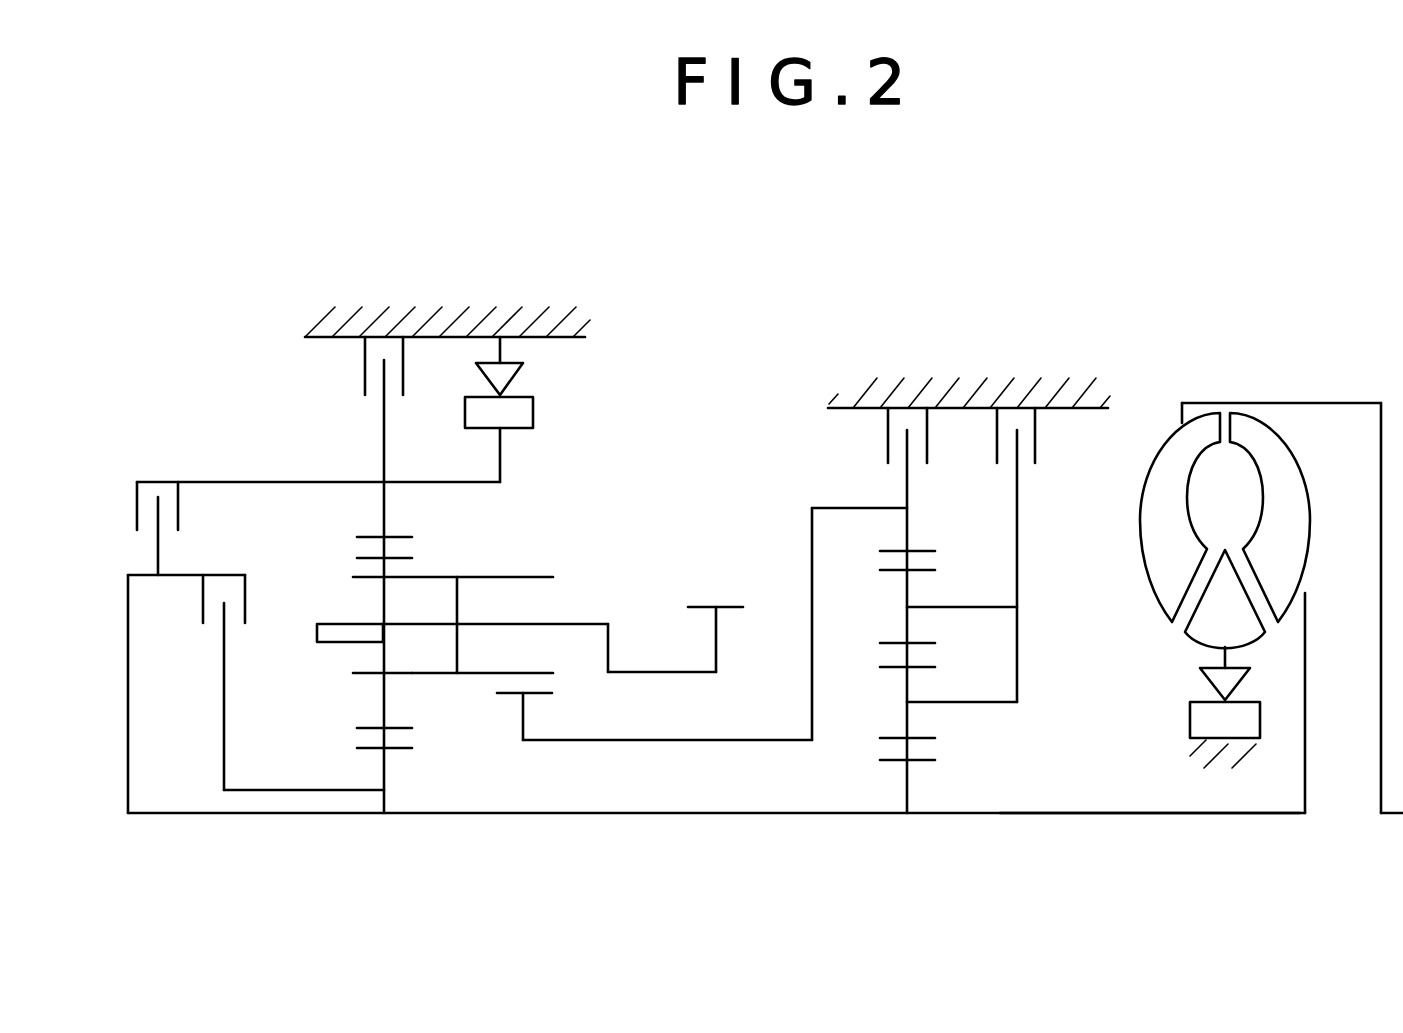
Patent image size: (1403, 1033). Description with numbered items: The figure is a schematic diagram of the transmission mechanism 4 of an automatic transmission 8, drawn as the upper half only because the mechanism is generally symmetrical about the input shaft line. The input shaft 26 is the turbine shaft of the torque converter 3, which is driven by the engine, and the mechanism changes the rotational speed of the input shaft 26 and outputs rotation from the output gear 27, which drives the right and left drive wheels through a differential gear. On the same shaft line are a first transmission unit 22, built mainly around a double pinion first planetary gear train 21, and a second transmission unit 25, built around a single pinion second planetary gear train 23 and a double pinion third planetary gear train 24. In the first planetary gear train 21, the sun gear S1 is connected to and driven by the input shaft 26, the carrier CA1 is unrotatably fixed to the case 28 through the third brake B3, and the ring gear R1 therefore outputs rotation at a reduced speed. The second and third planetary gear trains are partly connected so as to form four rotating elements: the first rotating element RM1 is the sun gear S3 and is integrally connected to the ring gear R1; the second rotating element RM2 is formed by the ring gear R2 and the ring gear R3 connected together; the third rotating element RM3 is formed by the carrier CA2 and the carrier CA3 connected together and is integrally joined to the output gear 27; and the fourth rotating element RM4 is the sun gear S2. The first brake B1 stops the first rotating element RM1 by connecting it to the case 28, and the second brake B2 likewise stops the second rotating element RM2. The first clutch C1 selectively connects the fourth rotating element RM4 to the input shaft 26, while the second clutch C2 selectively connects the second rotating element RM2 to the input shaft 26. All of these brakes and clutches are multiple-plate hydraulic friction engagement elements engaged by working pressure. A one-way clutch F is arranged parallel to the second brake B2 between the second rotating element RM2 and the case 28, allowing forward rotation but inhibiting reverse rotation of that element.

The torque converter 3 is at (1265, 315).
The transmission mechanism 4 is at (848, 317).
The automatic transmission 8 is at (1075, 235).
The first planetary gear train 21 is at (942, 680).
The first transmission unit 22 is at (793, 423).
The second planetary gear train 23 is at (383, 808).
The third planetary gear train 24 is at (630, 708).
The second transmission unit 25 is at (472, 504).
The input shaft 26 is at (1050, 815).
The output gear 27 is at (705, 606).
The case 28 is at (440, 322).
The first brake B1 is at (878, 435).
The second brake B2 is at (353, 368).
The third brake B3 is at (1048, 435).
The first clutch C1 is at (229, 660).
The second clutch C2 is at (152, 501).
The one-way clutch F is at (517, 409).
The ring gear R1 is at (920, 551).
The ring gear R2 is at (453, 526).
The ring gear R3 is at (400, 537).
The sun gear S1 is at (920, 760).
The sun gear S2 is at (396, 749).
The sun gear S3 is at (535, 693).
The carrier CA1 is at (1017, 670).
The carrier CA2 is at (356, 642).
The carrier CA3 is at (535, 625).
The first rotating element RM1 is at (660, 741).
The second rotating element RM2 is at (340, 482).
The third rotating element RM3 is at (663, 672).
The fourth rotating element RM4 is at (310, 790).